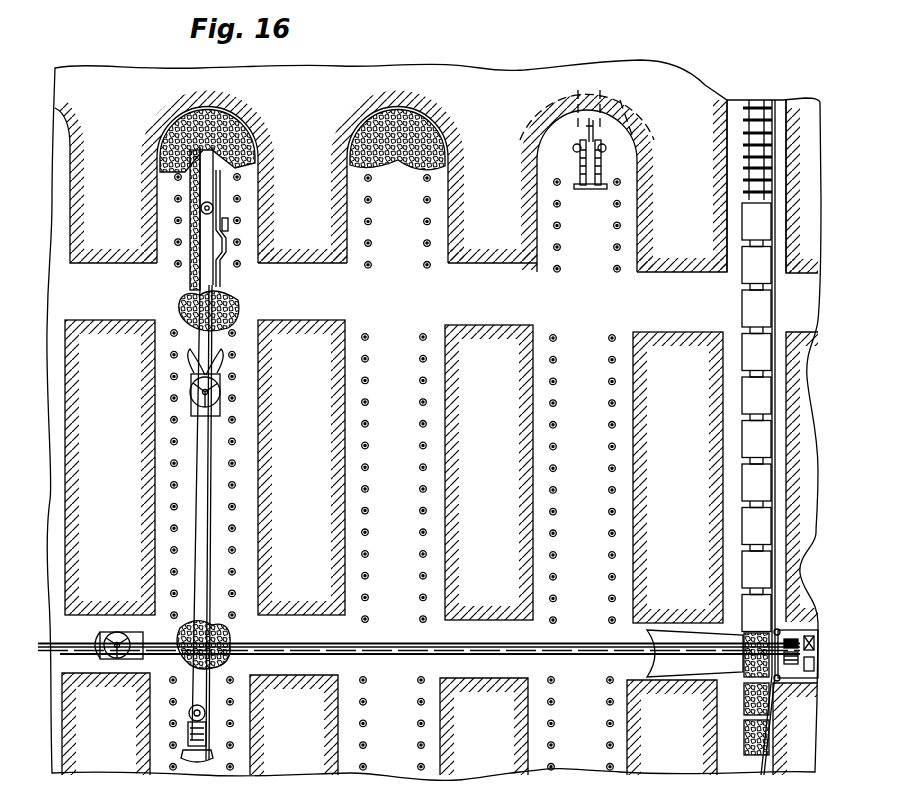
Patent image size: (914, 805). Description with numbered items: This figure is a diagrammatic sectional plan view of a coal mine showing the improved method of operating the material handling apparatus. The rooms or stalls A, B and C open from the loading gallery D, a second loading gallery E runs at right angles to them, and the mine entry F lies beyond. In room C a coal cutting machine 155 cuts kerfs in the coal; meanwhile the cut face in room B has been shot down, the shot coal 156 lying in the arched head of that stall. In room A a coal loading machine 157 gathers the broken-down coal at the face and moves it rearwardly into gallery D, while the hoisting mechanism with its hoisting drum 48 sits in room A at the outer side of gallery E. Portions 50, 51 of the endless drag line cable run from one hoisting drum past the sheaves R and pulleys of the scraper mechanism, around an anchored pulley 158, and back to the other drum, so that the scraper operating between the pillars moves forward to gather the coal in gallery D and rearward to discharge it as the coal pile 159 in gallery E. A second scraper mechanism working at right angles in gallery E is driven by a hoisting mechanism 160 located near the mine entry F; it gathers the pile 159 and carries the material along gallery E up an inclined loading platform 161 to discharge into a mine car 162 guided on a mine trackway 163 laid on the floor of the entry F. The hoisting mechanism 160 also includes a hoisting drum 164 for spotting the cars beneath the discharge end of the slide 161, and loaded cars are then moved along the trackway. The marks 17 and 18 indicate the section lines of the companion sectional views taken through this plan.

The section line of Fig. 17 is at (45, 662).
The section line of Fig. 18 is at (212, 42).
The hoisting drum 48 is at (206, 718).
The cable portion 50 is at (193, 553).
The cable portion 51 is at (211, 507).
The coal cutting machine 155 is at (585, 140).
The shot coal 156 is at (188, 125).
The coal loading machine 157 is at (209, 188).
The anchored pulley 158 is at (228, 270).
The coal pile 159 is at (222, 635).
The hoisting mechanism 160 is at (787, 660).
The inclined loading platform 161 is at (677, 640).
The mine car 162 is at (790, 653).
The mine trackway 163 is at (745, 178).
The hoisting drum 164 is at (806, 638).
The room or stall A is at (240, 163).
The room or stall B is at (427, 123).
The room or stall C is at (620, 143).
The loading gallery D is at (419, 299).
The loading gallery E is at (419, 661).
The mine entry F is at (737, 155).
The rope sheave R is at (188, 390).